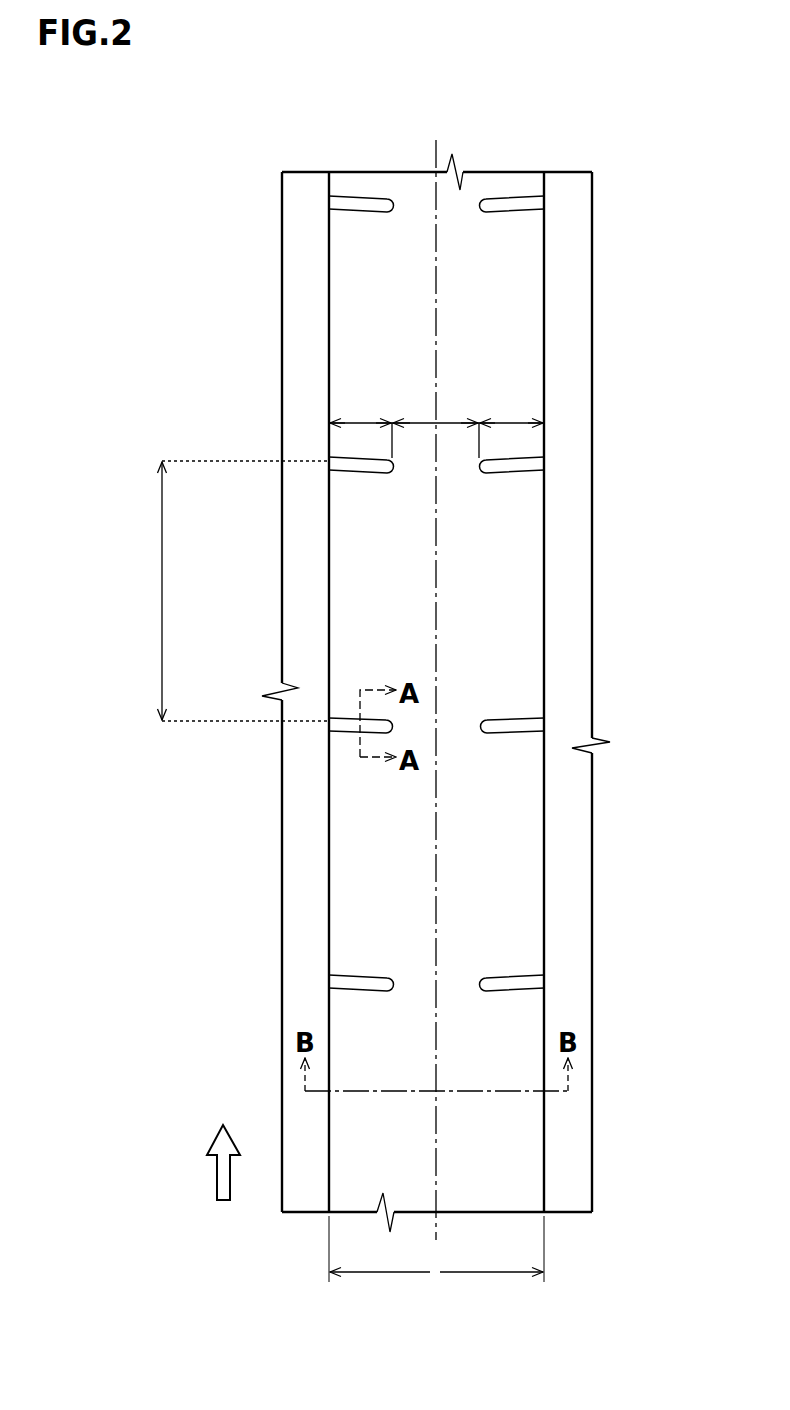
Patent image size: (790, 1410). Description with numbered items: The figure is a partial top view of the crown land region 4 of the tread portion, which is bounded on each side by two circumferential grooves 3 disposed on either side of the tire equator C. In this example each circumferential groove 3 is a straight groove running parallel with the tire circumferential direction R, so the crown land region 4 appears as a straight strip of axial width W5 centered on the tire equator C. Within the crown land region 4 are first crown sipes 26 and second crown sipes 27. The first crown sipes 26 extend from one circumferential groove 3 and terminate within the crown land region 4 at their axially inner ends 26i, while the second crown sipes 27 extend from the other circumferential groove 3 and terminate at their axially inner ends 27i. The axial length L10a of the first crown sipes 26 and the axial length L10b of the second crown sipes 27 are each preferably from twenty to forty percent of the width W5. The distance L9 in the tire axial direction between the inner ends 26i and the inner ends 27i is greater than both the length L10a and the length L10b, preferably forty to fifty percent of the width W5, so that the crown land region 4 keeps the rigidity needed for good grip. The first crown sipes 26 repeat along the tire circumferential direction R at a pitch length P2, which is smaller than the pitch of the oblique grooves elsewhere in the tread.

The circumferential groove 3 is at (304, 203).
The crown land region 4 is at (412, 224).
The first crown sipe 26 is at (358, 206).
The second crown sipe 27 is at (512, 206).
The axially inner end of the first crown sipe 26i is at (403, 474).
The axially inner end of the second crown sipe 27i is at (470, 474).
The distance in the tire axial direction between the inner ends L9 is at (449, 422).
The axial length of the first crown sipes L10a is at (360, 421).
The axial length of the second crown sipes L10b is at (509, 422).
The pitch length of the first crown sipes P2 is at (224, 591).
The axial width of the crown land region W5 is at (436, 1260).
The tire equator C is at (435, 678).
The tire circumferential direction R is at (223, 1146).